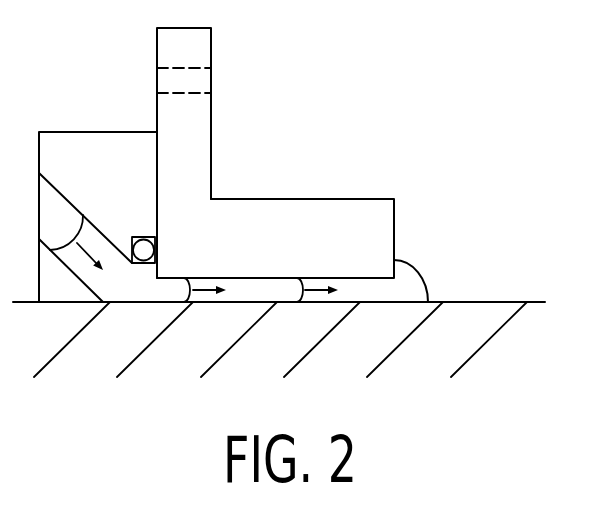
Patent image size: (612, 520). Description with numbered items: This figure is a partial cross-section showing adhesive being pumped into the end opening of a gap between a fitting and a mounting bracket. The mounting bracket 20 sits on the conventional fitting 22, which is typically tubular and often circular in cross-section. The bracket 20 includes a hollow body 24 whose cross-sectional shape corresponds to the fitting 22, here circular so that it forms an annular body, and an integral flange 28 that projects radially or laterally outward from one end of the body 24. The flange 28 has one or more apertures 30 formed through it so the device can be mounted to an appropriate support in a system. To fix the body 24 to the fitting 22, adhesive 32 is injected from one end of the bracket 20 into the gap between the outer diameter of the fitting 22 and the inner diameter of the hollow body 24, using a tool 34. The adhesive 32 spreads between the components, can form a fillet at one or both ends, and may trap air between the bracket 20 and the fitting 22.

The mounting bracket 20 is at (258, 161).
The fitting 22 is at (521, 281).
The hollow body 24 is at (350, 217).
The flange 28 is at (202, 128).
The apertures 30 is at (211, 80).
The adhesive 32 is at (420, 279).
The tool 34 is at (93, 142).